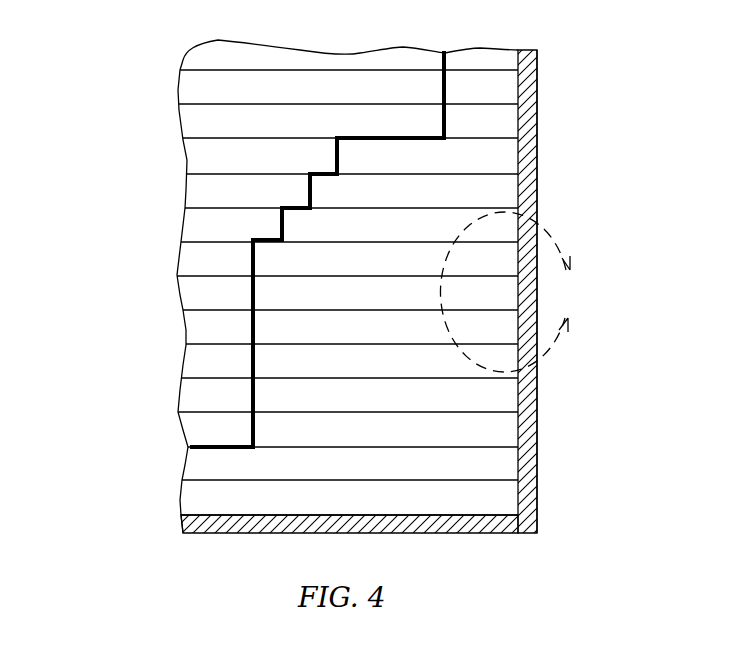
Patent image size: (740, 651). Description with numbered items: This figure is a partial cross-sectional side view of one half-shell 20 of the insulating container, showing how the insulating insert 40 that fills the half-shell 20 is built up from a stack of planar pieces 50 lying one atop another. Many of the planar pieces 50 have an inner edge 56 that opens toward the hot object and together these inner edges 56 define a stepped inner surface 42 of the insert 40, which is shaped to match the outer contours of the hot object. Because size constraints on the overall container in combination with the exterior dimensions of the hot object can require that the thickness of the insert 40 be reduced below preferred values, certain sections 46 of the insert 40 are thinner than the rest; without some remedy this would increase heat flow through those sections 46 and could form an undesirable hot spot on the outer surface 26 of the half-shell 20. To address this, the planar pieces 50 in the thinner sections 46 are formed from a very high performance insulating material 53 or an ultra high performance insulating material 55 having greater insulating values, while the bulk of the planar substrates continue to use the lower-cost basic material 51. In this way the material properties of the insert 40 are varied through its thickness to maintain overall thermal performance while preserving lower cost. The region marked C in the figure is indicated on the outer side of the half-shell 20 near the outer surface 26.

The half-shell 20 is at (537, 150).
The outer surface 26 is at (545, 85).
The insert 40 is at (160, 462).
The inner surface 42 is at (280, 184).
The sections 46 is at (430, 92).
The planar pieces 50 is at (492, 467).
The basic material 51 is at (405, 341).
The very high performance insulating material 53 is at (405, 205).
The ultra high performance insulating material 55 is at (498, 101).
The inner edge 56 is at (253, 298).
The region C is at (521, 292).